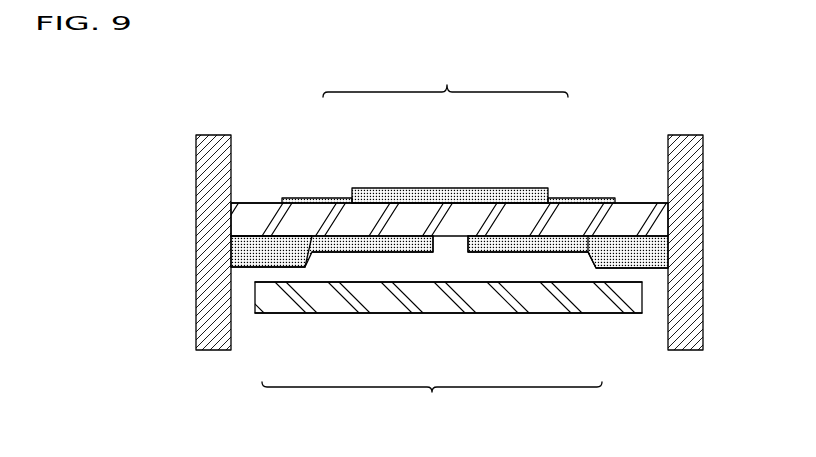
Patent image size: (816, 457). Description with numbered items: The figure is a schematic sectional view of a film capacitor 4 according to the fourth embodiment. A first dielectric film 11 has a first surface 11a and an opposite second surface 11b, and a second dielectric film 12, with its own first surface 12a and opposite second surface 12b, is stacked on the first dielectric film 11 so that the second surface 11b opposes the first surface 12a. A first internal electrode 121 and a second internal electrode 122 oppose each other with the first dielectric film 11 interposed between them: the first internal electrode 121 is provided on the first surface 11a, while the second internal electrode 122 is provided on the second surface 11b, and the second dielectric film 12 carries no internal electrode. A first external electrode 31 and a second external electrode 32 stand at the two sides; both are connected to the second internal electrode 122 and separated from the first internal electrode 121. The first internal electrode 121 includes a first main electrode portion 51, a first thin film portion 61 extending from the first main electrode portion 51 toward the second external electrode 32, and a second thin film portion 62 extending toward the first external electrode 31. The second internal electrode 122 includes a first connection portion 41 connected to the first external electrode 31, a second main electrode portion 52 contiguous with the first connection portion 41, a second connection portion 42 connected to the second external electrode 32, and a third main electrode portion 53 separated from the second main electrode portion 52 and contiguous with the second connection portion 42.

The film capacitor 4 is at (716, 108).
The first external electrode 31 is at (207, 168).
The second external electrode 32 is at (693, 168).
The first dielectric film 11 is at (250, 226).
The first surface 11a is at (232, 207).
The second surface 11b is at (250, 249).
The second dielectric film 12 is at (633, 303).
The first surface 12a is at (655, 285).
The second surface 12b is at (637, 313).
The first connection portion 41 is at (262, 254).
The second connection portion 42 is at (630, 262).
The first main electrode portion 51 is at (428, 188).
The second main electrode portion 52 is at (357, 245).
The third main electrode portion 53 is at (530, 250).
The first thin film portion 61 is at (585, 200).
The second thin film portion 62 is at (312, 200).
The first internal electrode 121 is at (445, 79).
The second internal electrode 122 is at (432, 402).